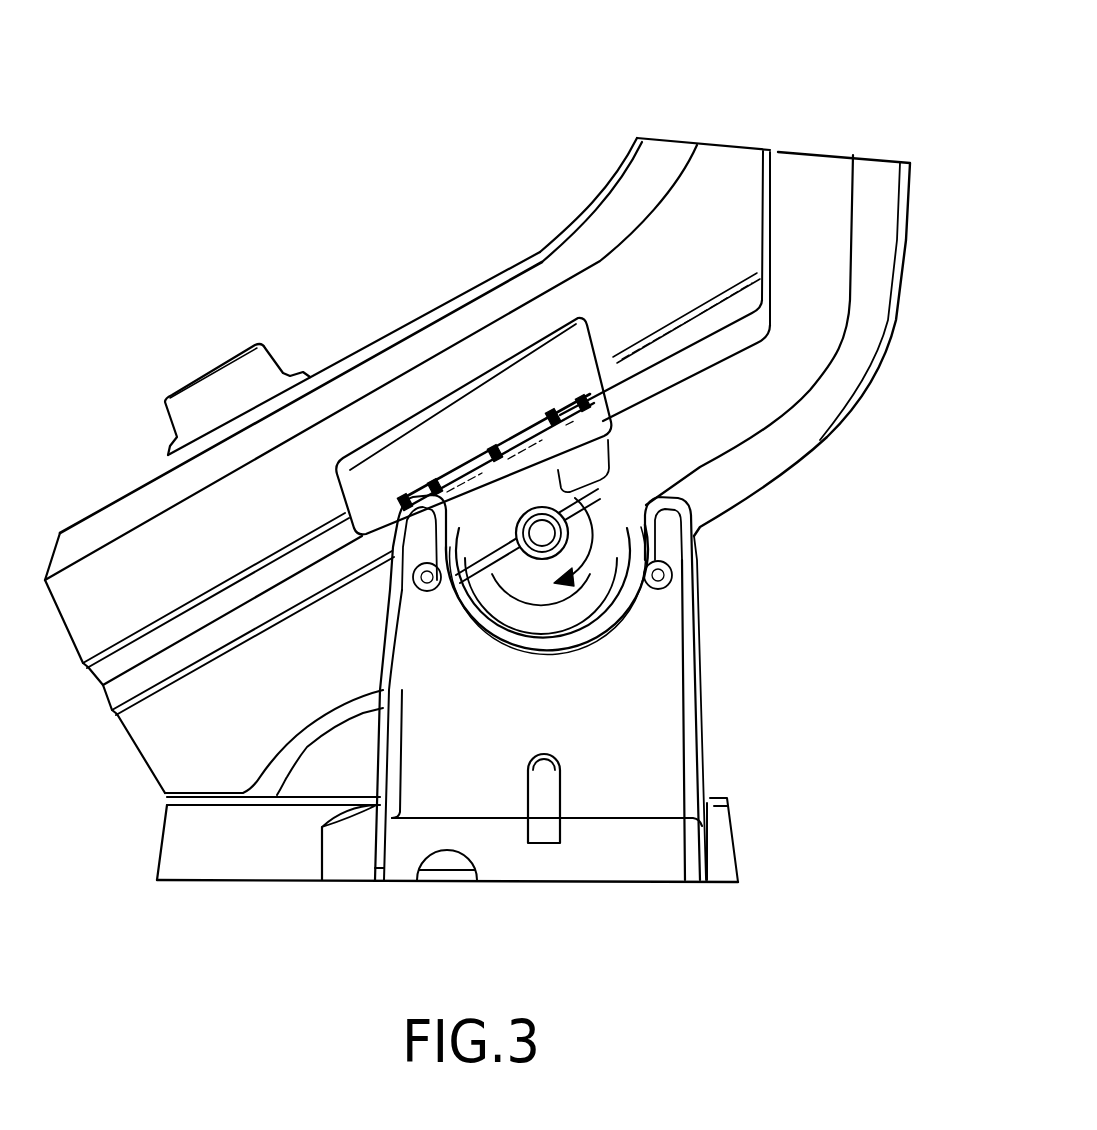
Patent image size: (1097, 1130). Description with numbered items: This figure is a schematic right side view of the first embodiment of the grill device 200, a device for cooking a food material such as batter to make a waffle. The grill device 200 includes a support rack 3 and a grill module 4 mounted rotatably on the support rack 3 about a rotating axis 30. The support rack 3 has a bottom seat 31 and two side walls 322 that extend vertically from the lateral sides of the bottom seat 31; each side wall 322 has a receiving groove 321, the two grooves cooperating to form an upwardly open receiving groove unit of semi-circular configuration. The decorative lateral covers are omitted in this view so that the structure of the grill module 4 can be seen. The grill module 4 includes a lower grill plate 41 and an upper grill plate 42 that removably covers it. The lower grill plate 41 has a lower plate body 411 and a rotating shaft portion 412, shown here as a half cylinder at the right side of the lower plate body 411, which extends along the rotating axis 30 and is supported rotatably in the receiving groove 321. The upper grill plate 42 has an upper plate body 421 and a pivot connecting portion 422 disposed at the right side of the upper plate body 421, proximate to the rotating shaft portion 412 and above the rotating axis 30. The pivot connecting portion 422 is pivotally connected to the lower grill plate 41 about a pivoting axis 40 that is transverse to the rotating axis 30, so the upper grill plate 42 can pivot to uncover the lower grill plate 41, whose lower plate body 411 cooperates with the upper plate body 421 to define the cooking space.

The support rack 3 is at (250, 882).
The bottom seat 31 is at (198, 853).
The rotating axis 30 is at (542, 533).
The receiving groove 321 is at (590, 578).
The side wall 322 is at (637, 747).
The grill module 4 is at (628, 133).
The pivoting axis 40 is at (360, 533).
The lower grill plate 41 is at (805, 440).
The lower plate body 411 is at (822, 390).
The rotating shaft portion 412 is at (593, 580).
The upper grill plate 42 is at (480, 288).
The upper plate body 421 is at (547, 280).
The pivot connecting portion 422 is at (462, 470).
The grill device 200 is at (572, 214).